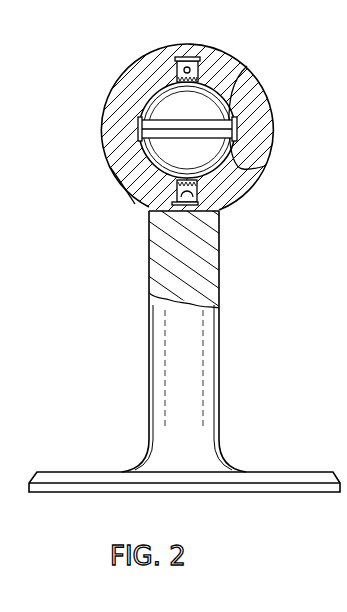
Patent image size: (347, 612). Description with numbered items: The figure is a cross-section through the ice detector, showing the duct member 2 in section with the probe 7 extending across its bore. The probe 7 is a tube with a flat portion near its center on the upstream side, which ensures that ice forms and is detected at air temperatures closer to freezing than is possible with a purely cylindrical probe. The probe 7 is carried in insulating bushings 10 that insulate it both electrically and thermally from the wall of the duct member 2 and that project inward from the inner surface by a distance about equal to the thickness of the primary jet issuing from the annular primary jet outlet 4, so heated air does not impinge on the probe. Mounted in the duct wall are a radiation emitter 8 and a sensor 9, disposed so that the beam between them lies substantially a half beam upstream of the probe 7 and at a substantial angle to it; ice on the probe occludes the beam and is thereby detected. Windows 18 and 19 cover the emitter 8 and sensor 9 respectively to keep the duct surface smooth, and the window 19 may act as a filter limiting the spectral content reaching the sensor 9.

The duct member 2 is at (218, 40).
The annular primary jet outlet 4 is at (232, 90).
The probe 7 is at (228, 196).
The radiation emitter 8 is at (220, 238).
The sensor 9 is at (189, 66).
The insulating bushings 10 is at (113, 168).
The window 18 is at (177, 186).
The window 19 is at (176, 80).